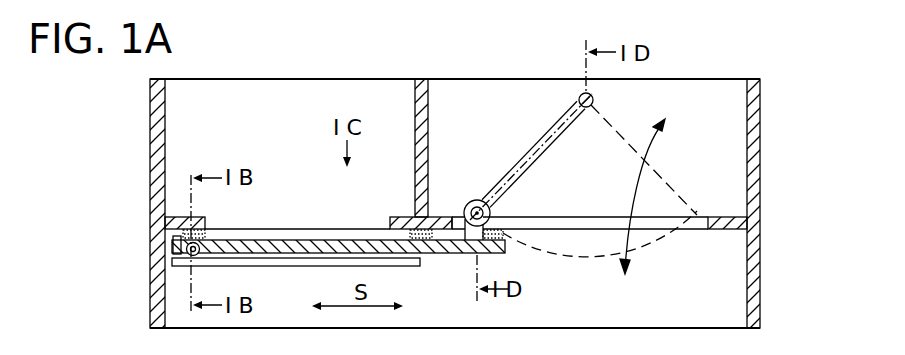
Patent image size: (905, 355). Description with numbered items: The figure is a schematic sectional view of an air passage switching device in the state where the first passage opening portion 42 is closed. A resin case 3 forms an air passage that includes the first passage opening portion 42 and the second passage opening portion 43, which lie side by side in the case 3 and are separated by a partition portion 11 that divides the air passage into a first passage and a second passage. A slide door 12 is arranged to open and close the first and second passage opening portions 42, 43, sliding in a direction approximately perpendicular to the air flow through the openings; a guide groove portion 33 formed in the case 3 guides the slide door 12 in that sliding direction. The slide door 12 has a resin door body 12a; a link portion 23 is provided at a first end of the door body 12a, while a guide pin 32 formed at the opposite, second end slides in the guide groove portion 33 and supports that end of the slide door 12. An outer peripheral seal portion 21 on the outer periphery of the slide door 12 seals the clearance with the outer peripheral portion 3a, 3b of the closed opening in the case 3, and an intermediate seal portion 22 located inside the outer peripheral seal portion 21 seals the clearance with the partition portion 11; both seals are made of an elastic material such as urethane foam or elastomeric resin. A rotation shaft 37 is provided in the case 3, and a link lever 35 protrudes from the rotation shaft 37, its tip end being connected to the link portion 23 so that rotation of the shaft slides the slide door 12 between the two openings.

The case 3 is at (760, 252).
The outer peripheral portion of first passage opening portion 3a is at (170, 216).
The outer peripheral portion of second passage opening portion 3b is at (730, 223).
The partition portion 11 is at (420, 102).
The slide door 12 is at (338, 244).
The door body 12a is at (297, 247).
The outer peripheral seal portion 21 is at (204, 233).
The intermediate seal portion 22 is at (410, 233).
The link portion 23 is at (467, 204).
The guide pin 32 is at (195, 256).
The guide groove portion 33 is at (270, 267).
The link lever 35 is at (518, 168).
The rotation shaft 37 is at (580, 98).
The first passage opening portion 42 is at (256, 228).
The second passage opening portion 43 is at (593, 225).